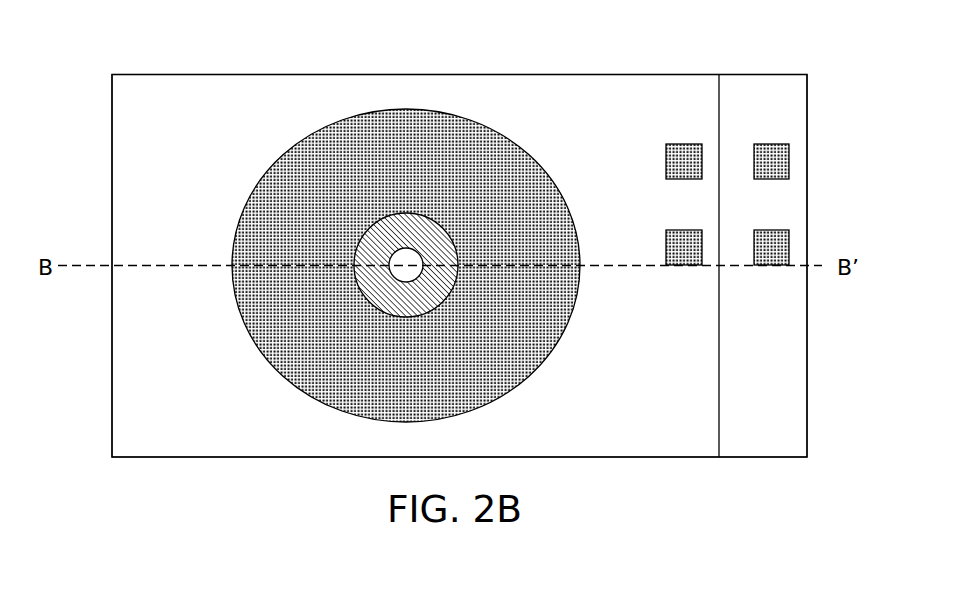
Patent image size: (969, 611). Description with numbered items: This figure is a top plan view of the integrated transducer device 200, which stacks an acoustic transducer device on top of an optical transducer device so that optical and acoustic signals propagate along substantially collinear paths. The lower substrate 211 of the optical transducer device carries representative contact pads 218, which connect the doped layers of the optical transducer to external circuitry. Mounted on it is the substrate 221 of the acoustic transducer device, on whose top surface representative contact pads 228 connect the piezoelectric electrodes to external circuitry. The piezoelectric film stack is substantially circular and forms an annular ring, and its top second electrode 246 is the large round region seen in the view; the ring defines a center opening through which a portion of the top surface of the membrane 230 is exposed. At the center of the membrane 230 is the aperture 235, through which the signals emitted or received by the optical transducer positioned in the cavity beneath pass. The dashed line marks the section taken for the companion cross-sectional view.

The integrated transducer device 200 is at (490, 55).
The substrate 211 is at (667, 92).
The substrate 221 is at (128, 232).
The second electrode 246 is at (355, 143).
The membrane 230 is at (425, 231).
The aperture 235 is at (407, 263).
The contact pads 228 is at (703, 158).
The contact pads 218 is at (789, 158).